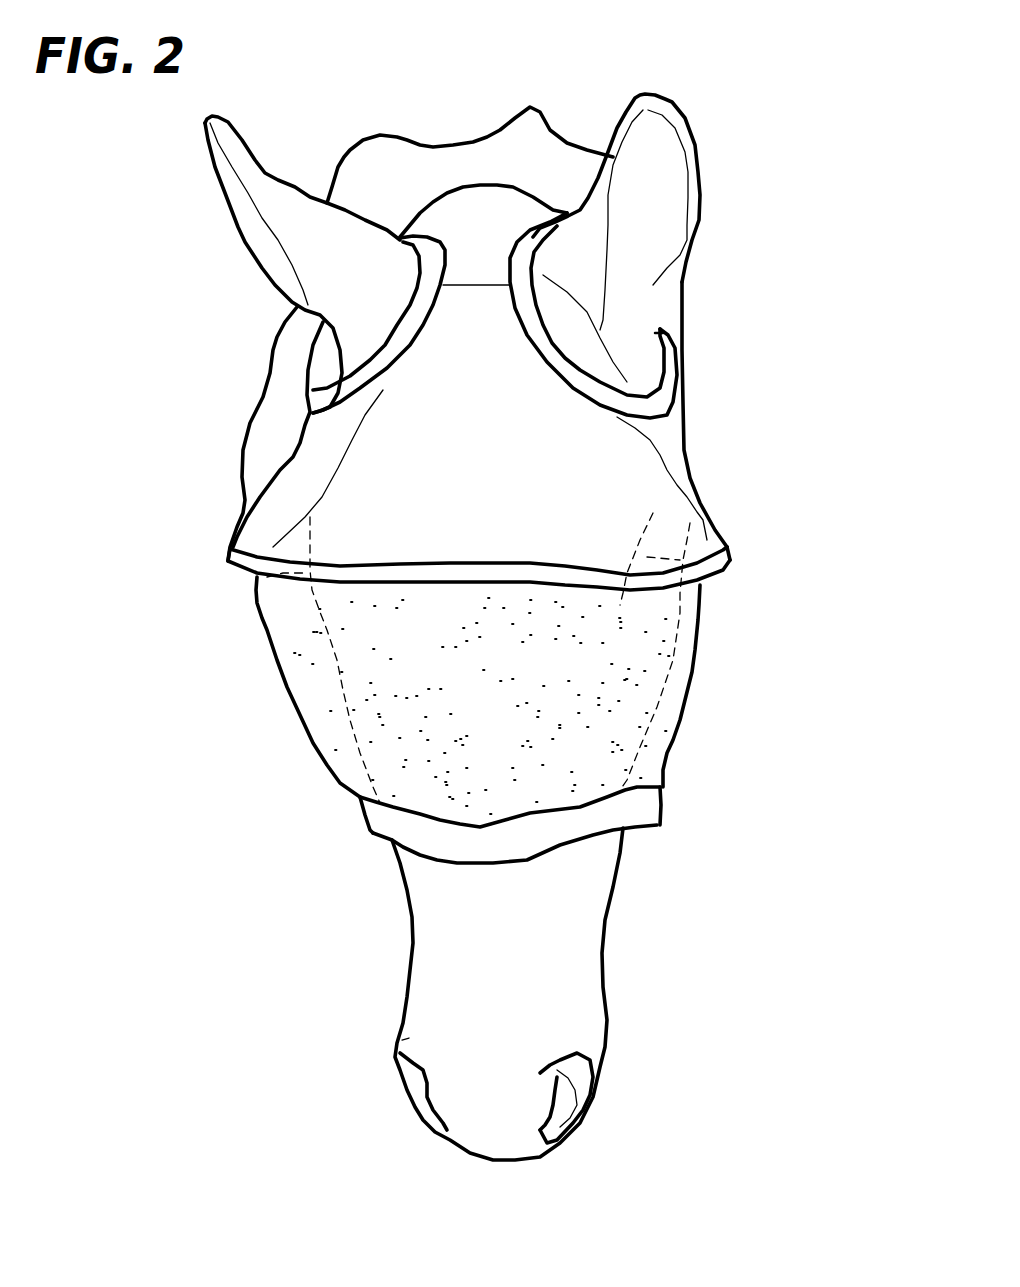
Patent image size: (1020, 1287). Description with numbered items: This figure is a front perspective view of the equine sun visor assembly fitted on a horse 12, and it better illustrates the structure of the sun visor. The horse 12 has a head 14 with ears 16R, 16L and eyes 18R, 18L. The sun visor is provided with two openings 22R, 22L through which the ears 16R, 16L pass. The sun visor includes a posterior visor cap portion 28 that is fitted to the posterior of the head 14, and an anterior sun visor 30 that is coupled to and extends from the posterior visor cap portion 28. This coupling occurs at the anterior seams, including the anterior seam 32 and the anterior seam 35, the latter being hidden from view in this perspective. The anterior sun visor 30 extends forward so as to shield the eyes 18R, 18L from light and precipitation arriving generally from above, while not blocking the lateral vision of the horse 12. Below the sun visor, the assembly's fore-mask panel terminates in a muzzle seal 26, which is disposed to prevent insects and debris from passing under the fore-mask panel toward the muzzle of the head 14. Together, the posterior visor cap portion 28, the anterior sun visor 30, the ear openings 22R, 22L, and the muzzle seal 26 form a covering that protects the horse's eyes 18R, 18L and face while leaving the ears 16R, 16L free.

The horse 12 is at (525, 130).
The head 14 is at (618, 880).
The right ear 16R is at (221, 119).
The left ear 16L is at (664, 94).
The right eye 18R is at (260, 590).
The left eye 18L is at (710, 568).
The right ear opening 22R is at (317, 372).
The left ear opening 22L is at (663, 393).
The muzzle seal 26 is at (663, 803).
The posterior visor cap portion 28 is at (507, 240).
The anterior sun visor 30 is at (487, 485).
The anterior seam 32 is at (470, 285).
The anterior seam 35 is at (657, 312).